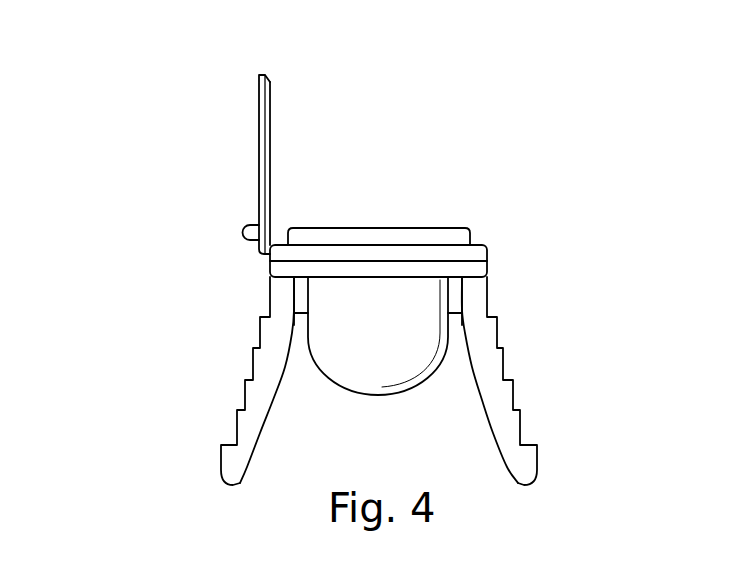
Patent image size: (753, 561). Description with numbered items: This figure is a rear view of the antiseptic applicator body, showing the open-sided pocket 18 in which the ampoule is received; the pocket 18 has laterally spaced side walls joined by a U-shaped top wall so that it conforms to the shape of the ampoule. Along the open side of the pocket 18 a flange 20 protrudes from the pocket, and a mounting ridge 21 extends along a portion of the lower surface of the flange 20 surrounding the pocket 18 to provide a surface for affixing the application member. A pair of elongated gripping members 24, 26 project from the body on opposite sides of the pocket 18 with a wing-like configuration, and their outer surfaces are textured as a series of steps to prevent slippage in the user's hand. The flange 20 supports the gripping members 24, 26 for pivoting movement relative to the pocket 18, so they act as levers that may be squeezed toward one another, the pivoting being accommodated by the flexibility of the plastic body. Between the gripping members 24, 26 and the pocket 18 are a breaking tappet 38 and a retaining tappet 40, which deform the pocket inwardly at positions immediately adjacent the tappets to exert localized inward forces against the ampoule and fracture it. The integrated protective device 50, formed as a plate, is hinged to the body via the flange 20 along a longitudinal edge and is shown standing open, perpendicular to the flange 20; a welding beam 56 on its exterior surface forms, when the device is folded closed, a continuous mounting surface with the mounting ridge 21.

The protective device 50 is at (260, 122).
The welding beam 56 is at (245, 227).
The mounting ridge 21 is at (445, 240).
The flange 20 is at (472, 260).
The retaining tappet 40 is at (297, 296).
The breaking tappet 38 is at (450, 288).
The pocket 18 is at (403, 345).
The gripping member 26 is at (258, 410).
The gripping member 24 is at (503, 444).